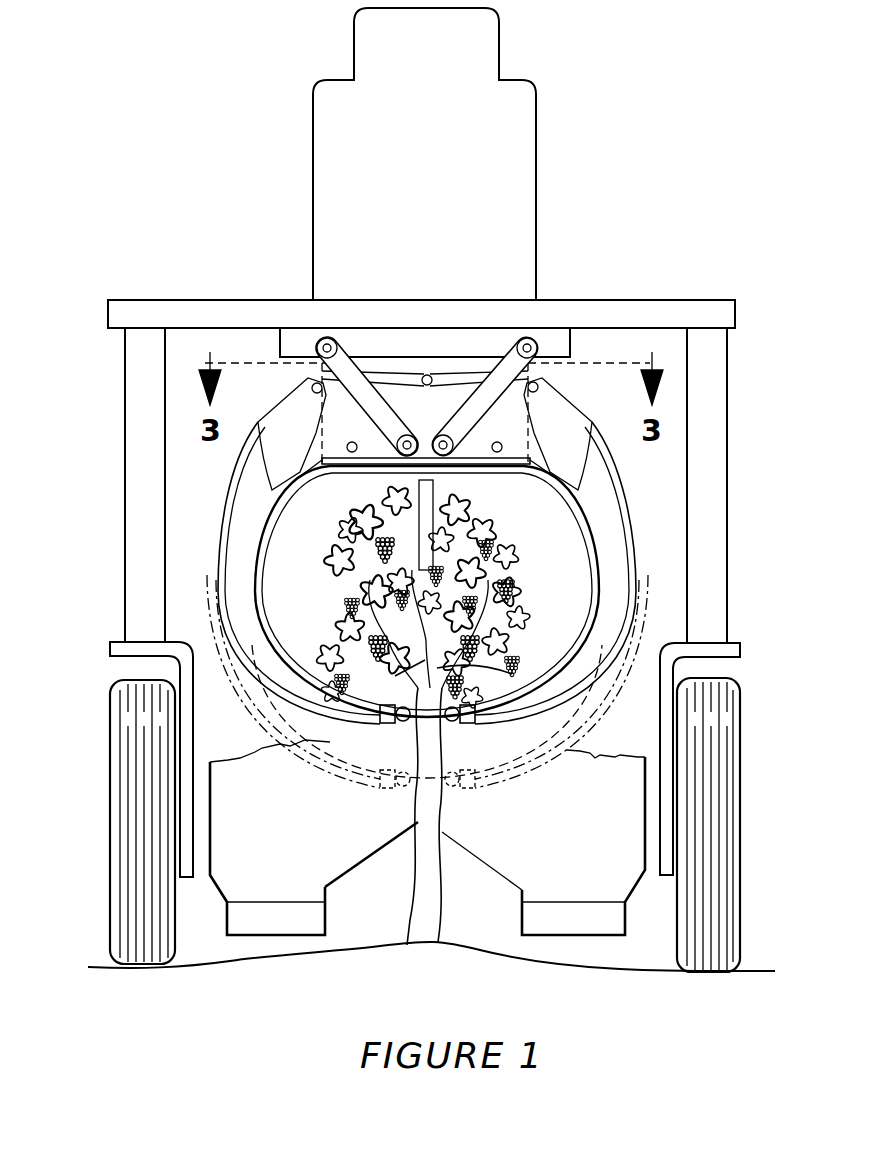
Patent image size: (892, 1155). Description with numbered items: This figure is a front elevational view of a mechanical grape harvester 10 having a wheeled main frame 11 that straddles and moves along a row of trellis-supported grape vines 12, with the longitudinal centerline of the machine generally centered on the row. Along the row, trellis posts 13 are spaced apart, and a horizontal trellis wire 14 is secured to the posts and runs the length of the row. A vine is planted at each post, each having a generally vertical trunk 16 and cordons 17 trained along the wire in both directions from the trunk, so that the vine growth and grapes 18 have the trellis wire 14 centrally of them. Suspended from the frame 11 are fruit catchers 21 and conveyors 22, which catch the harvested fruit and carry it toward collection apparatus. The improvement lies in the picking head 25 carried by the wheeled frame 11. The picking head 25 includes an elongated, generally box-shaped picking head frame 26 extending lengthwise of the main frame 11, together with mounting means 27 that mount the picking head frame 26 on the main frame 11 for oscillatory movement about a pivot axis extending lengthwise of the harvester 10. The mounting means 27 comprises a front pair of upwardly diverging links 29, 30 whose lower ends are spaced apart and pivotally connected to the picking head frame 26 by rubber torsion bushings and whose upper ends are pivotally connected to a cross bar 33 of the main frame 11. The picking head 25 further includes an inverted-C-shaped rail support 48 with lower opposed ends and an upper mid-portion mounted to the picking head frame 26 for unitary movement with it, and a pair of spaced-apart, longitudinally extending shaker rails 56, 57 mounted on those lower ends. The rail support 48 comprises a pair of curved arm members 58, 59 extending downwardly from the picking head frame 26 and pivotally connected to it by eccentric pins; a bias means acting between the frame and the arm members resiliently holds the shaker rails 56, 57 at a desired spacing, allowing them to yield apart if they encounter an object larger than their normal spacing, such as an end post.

The mechanical grape harvester 10 is at (580, 163).
The wheeled main frame 11 is at (612, 300).
The trellis-supported grape vines 12 is at (452, 905).
The trellis posts 13 is at (433, 505).
The trellis wire 14 is at (489, 679).
The trunk 16 is at (428, 815).
The cordons 17 is at (395, 676).
The grapes 18 is at (362, 528).
The fruit catchers 21 is at (356, 862).
The conveyors 22 is at (287, 902).
The picking head 25 is at (606, 416).
The picking head frame 26 is at (485, 466).
The mounting means 27 is at (552, 374).
The link 29 is at (367, 372).
The link 30 is at (497, 382).
The cross bar 33 is at (280, 349).
The rail support 48 is at (252, 418).
The shaker rail 56 is at (400, 722).
The shaker rail 57 is at (458, 723).
The curved arm member 58 is at (248, 562).
The curved arm member 59 is at (600, 562).